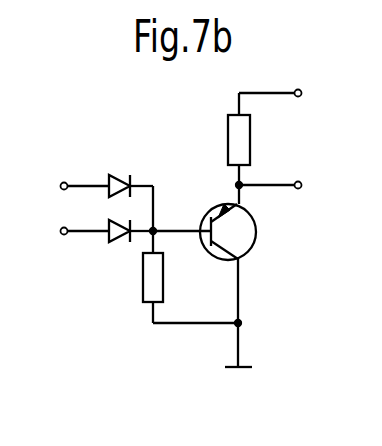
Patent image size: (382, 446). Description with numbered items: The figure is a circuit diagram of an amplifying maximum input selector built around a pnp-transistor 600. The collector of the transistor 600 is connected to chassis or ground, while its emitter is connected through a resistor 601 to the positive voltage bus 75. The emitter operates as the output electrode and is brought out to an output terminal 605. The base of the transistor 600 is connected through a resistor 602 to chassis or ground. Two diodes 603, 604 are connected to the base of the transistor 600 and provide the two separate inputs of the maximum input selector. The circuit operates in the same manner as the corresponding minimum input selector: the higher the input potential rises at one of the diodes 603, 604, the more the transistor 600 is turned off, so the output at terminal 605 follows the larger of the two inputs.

The positive voltage bus 75 is at (258, 92).
The resistor 601 is at (250, 137).
The output terminal 605 is at (298, 181).
The diode 603 is at (119, 176).
The diode 604 is at (118, 243).
The resistor 602 is at (164, 285).
The pnp-transistor 600 is at (256, 229).